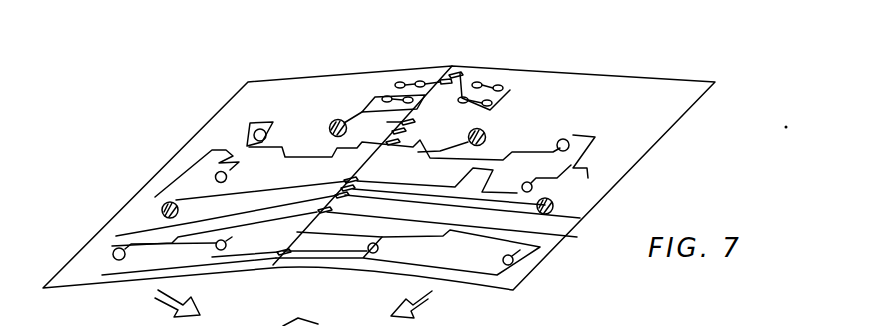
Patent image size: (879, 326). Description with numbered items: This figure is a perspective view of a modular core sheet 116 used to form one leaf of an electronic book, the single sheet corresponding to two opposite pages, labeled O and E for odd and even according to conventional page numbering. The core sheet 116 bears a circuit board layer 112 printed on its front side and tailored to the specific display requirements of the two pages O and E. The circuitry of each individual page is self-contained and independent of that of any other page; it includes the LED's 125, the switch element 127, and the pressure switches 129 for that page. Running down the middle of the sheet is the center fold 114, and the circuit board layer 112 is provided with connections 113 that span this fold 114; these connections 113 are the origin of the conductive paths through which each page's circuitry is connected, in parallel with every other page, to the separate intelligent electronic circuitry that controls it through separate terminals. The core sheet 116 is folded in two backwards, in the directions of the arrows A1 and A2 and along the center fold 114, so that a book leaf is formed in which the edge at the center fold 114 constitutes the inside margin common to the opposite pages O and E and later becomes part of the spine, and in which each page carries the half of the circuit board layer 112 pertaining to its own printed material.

The circuit board layer 112 is at (166, 185).
The connections 113 is at (460, 73).
The center fold 114 is at (278, 256).
The core sheet 116 is at (672, 30).
The LED's 125 is at (256, 129).
The switch element 127 is at (405, 76).
The pressure switches 129 is at (162, 208).
The even page E is at (220, 107).
The odd page O is at (638, 159).
The arrow A1 is at (160, 300).
The arrow A2 is at (432, 300).